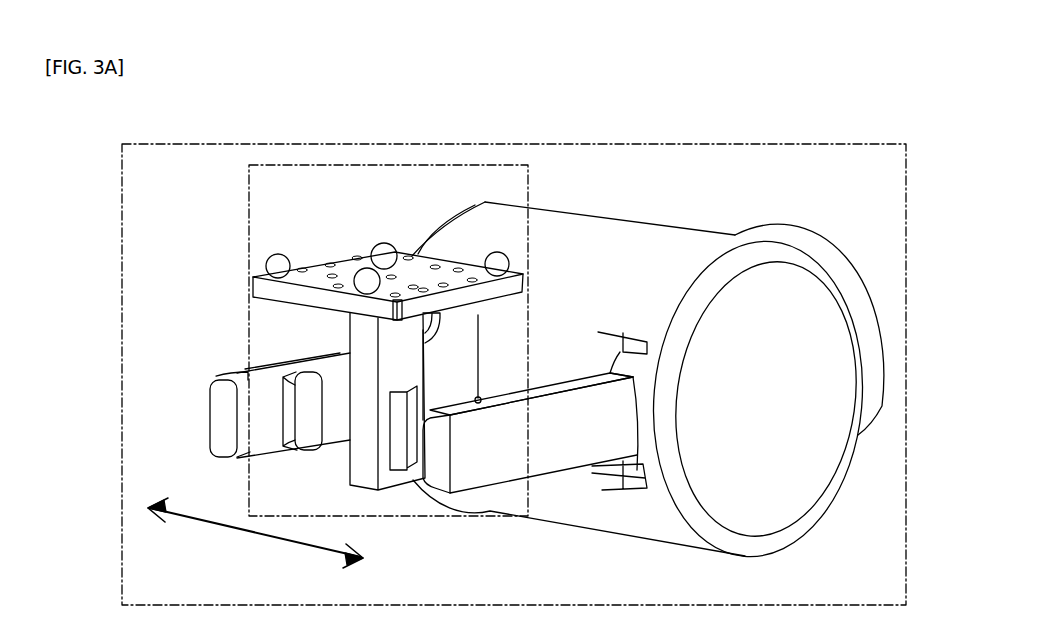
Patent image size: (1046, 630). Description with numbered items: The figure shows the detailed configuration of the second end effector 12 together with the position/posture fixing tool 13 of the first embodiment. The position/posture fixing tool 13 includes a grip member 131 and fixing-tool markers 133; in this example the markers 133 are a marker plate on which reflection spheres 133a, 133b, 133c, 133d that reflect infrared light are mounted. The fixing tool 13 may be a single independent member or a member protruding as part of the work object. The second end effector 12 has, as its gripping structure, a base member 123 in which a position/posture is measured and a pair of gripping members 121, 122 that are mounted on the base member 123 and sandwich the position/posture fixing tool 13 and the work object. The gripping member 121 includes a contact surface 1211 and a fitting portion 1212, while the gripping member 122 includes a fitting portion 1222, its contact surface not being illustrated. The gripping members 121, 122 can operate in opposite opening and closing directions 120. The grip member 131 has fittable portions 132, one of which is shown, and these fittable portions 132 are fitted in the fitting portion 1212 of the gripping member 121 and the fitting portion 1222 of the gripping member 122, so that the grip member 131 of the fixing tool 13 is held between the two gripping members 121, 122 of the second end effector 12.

The second end effector 12 is at (811, 143).
The position/posture fixing tool 13 is at (248, 203).
The opening and closing directions 120 is at (247, 532).
The gripping member 121 is at (232, 372).
The contact surface 1211 is at (270, 417).
The fitting portion 1212 is at (277, 373).
The gripping member 122 is at (582, 470).
The fitting portion 1222 is at (478, 403).
The base member 123 is at (640, 216).
The grip member 131 is at (357, 465).
The fittable portion 132 is at (400, 457).
The fixing-tool markers 133 is at (406, 253).
The reflection sphere 133a is at (278, 254).
The reflection sphere 133b is at (355, 268).
The reflection sphere 133c is at (384, 243).
The reflection sphere 133d is at (497, 252).